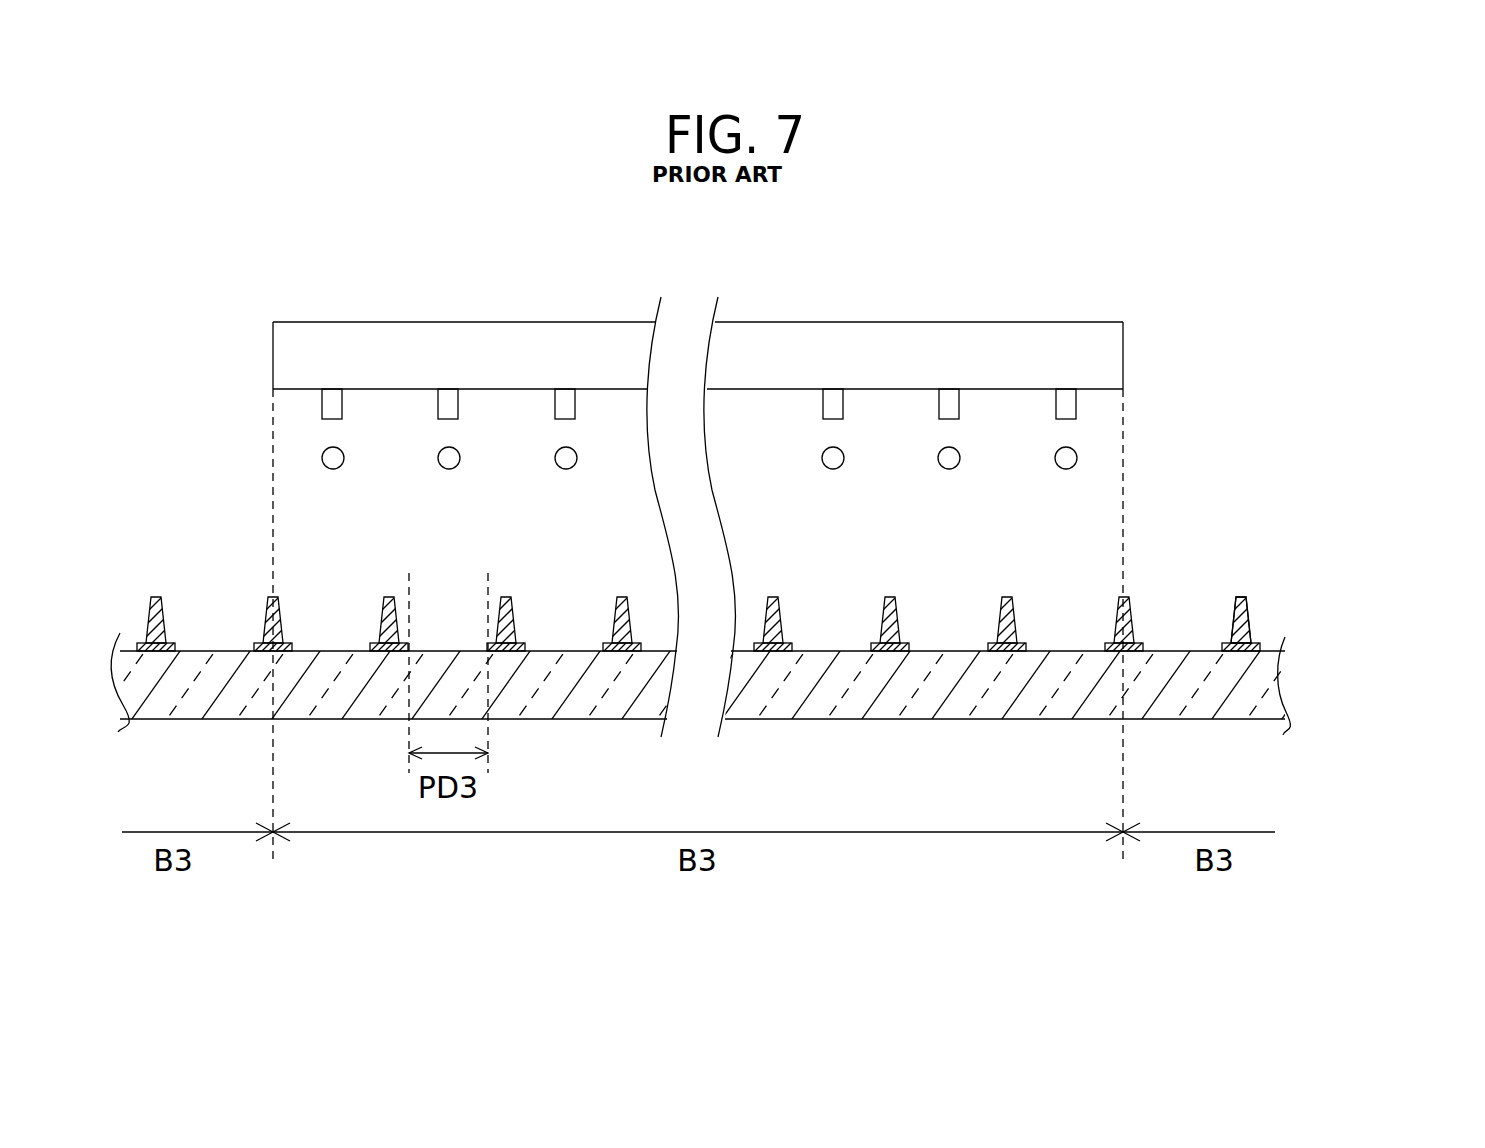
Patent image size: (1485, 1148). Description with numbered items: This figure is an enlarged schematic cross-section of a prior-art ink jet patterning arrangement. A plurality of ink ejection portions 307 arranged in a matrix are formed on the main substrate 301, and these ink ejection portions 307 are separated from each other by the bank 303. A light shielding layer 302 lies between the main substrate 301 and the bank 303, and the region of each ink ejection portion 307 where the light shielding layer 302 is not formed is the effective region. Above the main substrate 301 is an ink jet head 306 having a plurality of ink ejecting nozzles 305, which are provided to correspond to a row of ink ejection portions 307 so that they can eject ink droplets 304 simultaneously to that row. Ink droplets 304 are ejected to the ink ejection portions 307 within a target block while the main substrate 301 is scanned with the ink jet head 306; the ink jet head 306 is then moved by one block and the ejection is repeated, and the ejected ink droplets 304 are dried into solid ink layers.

The main substrate 301 is at (1268, 687).
The light shielding layer 302 is at (1260, 647).
The bank 303 is at (1240, 600).
The ink droplets 304 is at (1077, 460).
The ink ejecting nozzles 305 is at (1076, 406).
The ink jet head 306 is at (1123, 358).
The ink ejection portions 307 is at (1233, 623).